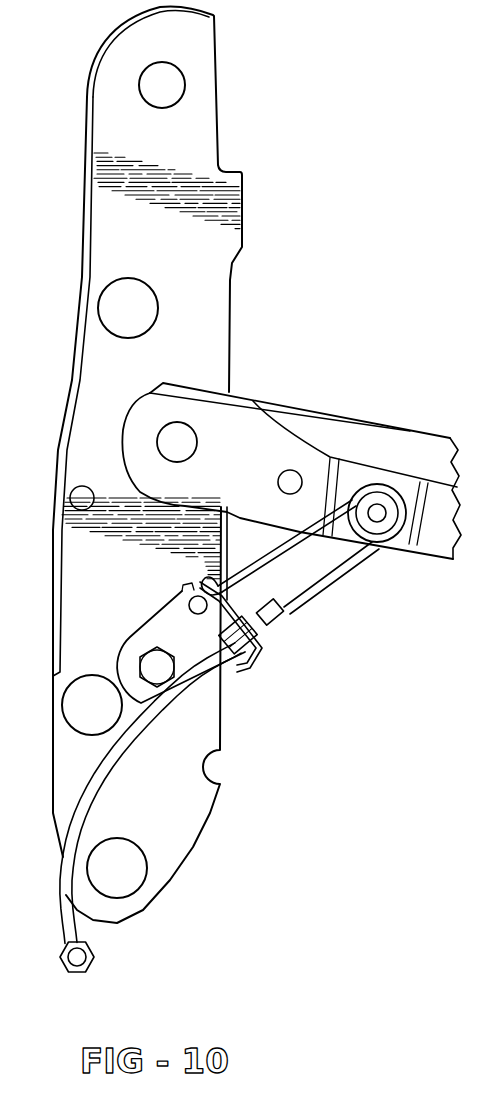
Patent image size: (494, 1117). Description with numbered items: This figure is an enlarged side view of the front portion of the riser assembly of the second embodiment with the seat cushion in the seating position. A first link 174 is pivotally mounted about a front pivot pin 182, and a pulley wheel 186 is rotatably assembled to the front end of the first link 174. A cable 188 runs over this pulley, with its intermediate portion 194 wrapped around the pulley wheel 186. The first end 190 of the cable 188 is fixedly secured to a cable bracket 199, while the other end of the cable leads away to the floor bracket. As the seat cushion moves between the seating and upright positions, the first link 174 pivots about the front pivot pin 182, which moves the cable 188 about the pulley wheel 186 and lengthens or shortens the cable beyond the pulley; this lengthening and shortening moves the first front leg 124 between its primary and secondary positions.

The first front leg 124 is at (72, 364).
The first link 174 is at (422, 447).
The front pivot pin 182 is at (190, 441).
The pulley wheel 186 is at (367, 485).
The cable 188 is at (322, 583).
The first end 190 is at (200, 585).
The intermediate portion 194 is at (380, 548).
The cable bracket 199 is at (250, 668).